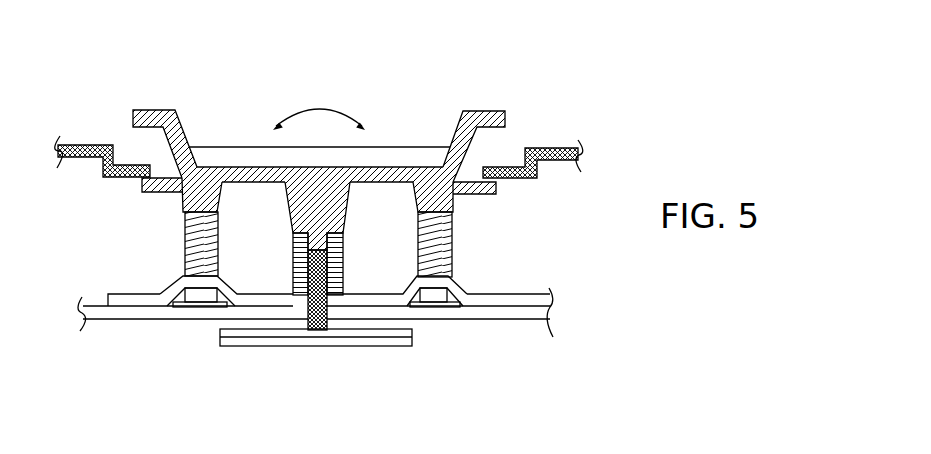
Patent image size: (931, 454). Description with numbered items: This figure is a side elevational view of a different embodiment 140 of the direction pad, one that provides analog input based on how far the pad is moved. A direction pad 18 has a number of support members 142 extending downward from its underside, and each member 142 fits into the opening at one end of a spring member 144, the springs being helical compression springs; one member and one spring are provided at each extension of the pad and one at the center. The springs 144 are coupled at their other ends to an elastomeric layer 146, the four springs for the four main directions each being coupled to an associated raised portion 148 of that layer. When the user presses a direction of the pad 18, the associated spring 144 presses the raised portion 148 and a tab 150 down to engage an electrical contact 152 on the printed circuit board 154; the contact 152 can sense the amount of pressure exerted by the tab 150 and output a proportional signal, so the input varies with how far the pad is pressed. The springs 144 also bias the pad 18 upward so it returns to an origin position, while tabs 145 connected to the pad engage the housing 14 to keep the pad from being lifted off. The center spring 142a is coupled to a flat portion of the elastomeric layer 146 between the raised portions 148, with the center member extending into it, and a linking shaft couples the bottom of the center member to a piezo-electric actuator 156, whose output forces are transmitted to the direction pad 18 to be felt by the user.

The embodiment 140 is at (116, 70).
The housing 14 is at (75, 145).
The direction pad 18 is at (490, 108).
The support members 142 is at (183, 198).
The center spring 142a is at (346, 202).
The spring members 144 is at (218, 262).
The tabs 145 is at (148, 192).
The elastomeric layer 146 is at (525, 297).
The raised portion 148 is at (183, 280).
The tab 150 is at (431, 301).
The electrical contact 152 is at (466, 304).
The printed circuit board 154 is at (505, 320).
The piezo-electric actuator 156 is at (278, 350).